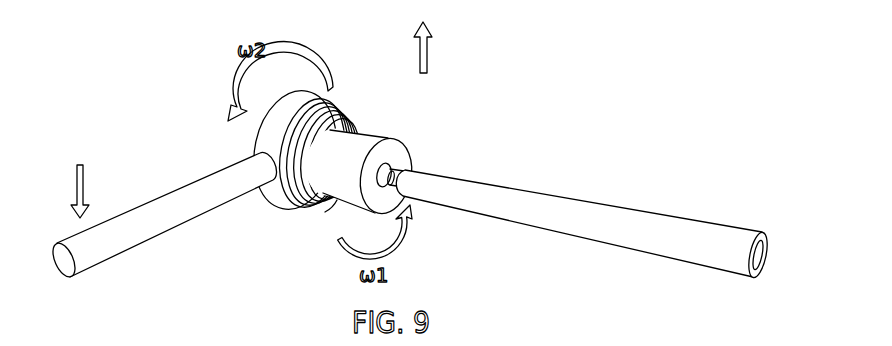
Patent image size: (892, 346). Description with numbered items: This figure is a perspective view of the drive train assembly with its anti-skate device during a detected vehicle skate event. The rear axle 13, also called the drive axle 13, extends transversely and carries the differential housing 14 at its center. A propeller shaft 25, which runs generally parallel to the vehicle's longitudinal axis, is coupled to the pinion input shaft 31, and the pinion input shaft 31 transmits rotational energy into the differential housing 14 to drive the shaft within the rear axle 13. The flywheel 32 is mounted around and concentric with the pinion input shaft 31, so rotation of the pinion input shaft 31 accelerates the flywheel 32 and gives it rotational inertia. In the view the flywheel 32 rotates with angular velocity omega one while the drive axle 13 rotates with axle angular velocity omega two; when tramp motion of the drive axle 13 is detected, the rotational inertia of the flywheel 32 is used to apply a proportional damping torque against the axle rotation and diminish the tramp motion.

The rear axle 13 is at (178, 189).
The differential housing 14 is at (326, 97).
The propeller shaft 25 is at (530, 191).
The pinion input shaft 31 is at (384, 164).
The flywheel 32 is at (337, 200).